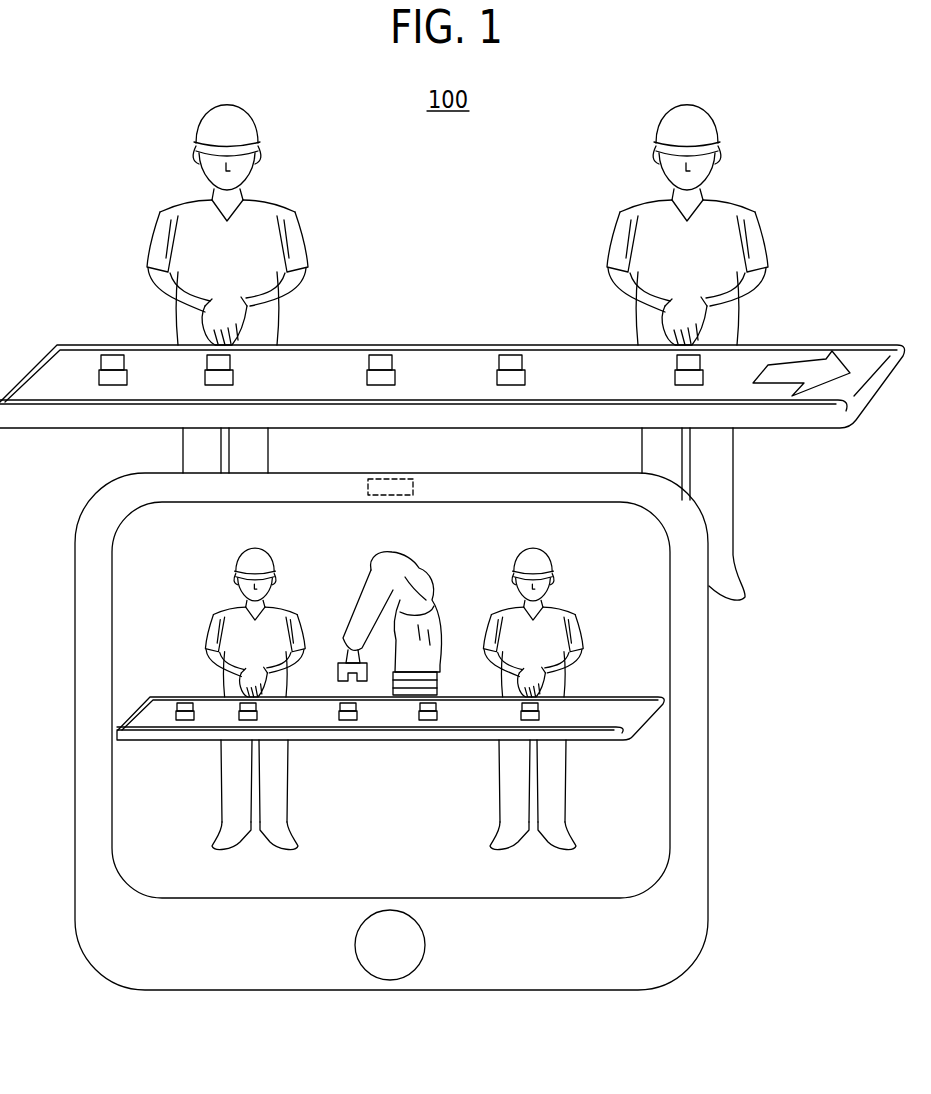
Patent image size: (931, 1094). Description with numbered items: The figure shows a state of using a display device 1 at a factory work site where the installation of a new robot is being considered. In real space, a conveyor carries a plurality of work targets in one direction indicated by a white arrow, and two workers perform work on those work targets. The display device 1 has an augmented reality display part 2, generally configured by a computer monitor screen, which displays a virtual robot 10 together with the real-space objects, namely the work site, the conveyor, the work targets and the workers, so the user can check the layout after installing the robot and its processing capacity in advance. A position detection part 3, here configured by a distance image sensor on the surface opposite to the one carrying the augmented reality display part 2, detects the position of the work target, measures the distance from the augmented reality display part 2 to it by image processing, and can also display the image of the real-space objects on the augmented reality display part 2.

The display device 1 is at (458, 713).
The augmented reality display part 2 is at (669, 797).
The position detection part 3 is at (368, 490).
The virtual robot 10 is at (413, 562).